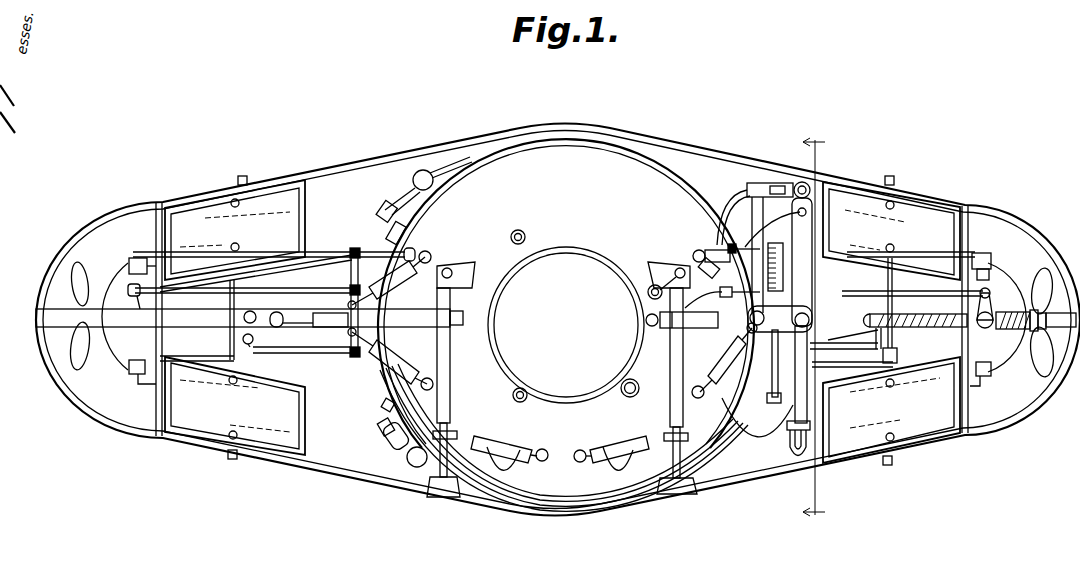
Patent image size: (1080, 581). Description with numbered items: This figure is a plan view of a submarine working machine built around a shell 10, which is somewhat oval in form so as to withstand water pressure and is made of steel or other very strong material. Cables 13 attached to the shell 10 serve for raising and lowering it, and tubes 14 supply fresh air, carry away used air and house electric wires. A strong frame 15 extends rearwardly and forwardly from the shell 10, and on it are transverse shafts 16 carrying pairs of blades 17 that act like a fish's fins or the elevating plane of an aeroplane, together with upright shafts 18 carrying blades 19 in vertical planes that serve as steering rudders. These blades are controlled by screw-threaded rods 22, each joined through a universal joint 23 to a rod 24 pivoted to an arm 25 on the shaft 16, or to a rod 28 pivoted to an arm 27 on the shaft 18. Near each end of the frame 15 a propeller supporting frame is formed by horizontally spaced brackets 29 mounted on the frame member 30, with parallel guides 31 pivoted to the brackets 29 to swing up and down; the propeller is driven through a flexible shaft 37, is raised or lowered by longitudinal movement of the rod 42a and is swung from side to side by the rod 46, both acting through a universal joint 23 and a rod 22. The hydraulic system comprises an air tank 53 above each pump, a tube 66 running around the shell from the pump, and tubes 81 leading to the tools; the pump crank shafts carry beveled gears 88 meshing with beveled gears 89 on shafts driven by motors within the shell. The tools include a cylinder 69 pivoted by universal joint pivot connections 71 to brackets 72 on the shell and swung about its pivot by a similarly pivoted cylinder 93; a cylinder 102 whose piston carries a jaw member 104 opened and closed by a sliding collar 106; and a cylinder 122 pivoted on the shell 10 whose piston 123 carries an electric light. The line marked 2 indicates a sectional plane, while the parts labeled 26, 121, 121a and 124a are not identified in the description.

The section line 2 is at (814, 327).
The shell 10 is at (566, 284).
The cables 13 is at (526, 236).
The tubes 14 is at (624, 394).
The frame 15 is at (704, 152).
The shafts 16 is at (246, 177).
The blades 17 is at (562, 321).
The upright shafts 18 is at (258, 312).
The blades 19 is at (940, 328).
The screw-threaded rod 22 is at (365, 258).
The universal joint 23 is at (350, 256).
The rod 24 is at (835, 367).
The arm 25 is at (897, 354).
The propeller 26 is at (72, 340).
The arm 27 is at (872, 342).
The rod 28 is at (849, 333).
The brackets 29 is at (992, 262).
The frame member 30 is at (968, 236).
The parallel guides 31 is at (1012, 288).
The flexible shaft 37 is at (1005, 330).
The rod 42a is at (940, 247).
The rod 46 is at (922, 296).
The air tank 53 is at (400, 458).
The tube 66 is at (672, 168).
The cylinder 69 is at (450, 392).
The universal joint pivot connections 71 is at (428, 254).
The brackets 72 is at (668, 270).
The tube 81 is at (520, 467).
The beveled gears 88 is at (380, 212).
The beveled gears 89 is at (390, 232).
The cylinder 93 is at (392, 380).
The cylinder 102 is at (780, 310).
The jaw member 104 is at (812, 446).
The collar 106 is at (793, 438).
The lug 121 is at (276, 328).
The fitting 121a is at (703, 250).
The cylinder 122 is at (675, 330).
The piston 123 is at (300, 318).
The actuator 124a is at (390, 298).